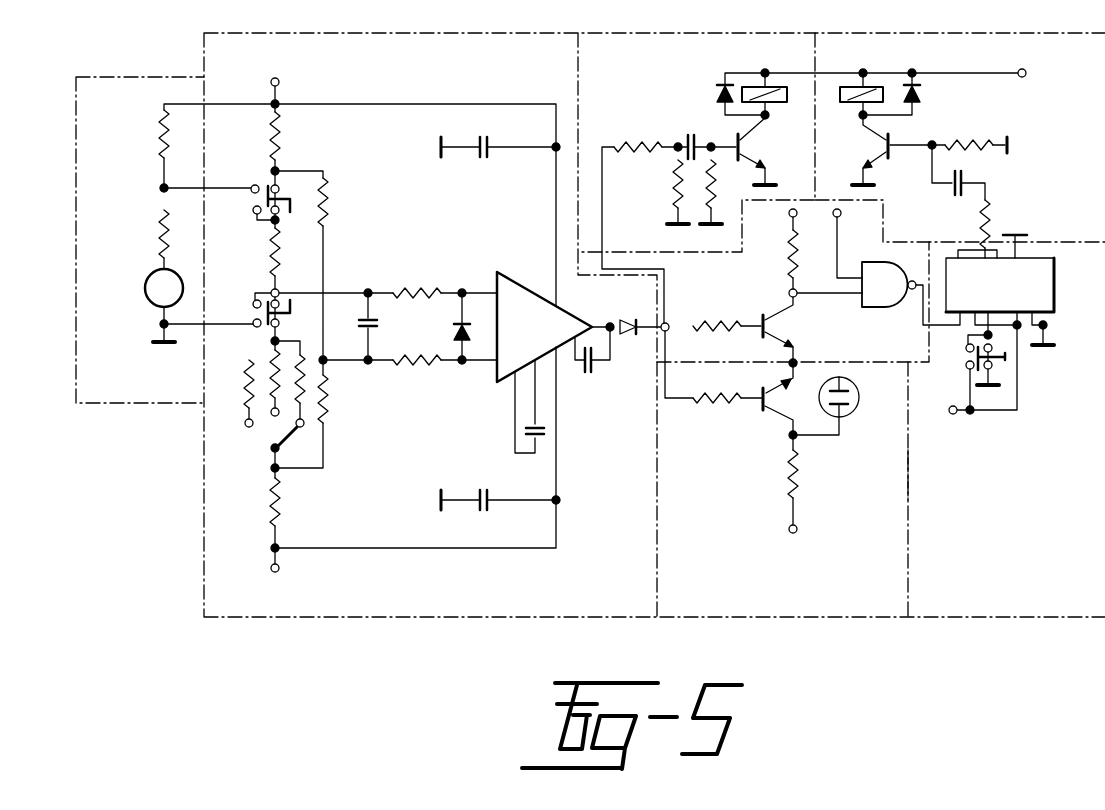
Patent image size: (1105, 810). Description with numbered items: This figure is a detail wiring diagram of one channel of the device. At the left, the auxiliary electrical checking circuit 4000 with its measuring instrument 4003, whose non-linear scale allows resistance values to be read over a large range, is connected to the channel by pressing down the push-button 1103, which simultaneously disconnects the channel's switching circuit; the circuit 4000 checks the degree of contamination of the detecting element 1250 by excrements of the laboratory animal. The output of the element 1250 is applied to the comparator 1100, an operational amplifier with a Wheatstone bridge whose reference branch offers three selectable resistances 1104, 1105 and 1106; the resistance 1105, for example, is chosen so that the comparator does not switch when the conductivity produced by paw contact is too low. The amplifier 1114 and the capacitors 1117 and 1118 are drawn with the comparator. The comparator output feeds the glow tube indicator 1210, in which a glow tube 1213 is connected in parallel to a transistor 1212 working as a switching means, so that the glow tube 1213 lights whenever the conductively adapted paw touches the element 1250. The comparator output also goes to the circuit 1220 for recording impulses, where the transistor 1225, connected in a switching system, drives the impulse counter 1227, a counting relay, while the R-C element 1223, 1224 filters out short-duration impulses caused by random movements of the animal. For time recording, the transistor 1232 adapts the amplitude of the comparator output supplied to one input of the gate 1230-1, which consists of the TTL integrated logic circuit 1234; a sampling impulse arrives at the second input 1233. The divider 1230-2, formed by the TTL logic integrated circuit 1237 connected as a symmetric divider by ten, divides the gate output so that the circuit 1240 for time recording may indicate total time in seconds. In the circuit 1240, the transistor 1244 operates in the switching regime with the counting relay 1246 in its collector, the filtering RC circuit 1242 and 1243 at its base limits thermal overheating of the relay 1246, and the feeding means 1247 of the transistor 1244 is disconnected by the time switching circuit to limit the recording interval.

The auxiliary electrical checking circuit 4000 is at (140, 229).
The measuring instrument 4003 is at (136, 288).
The comparator 1100 is at (654, 314).
The detecting element 1250 is at (244, 252).
The push-button 1103 is at (321, 220).
The resistance 1105 is at (266, 375).
The resistance 1106 is at (312, 340).
The resistance 1104 is at (249, 362).
The amplifier 1114 is at (544, 327).
The capacitor 1117 is at (560, 407).
The capacitor 1118 is at (596, 361).
The circuit for recording impulses 1220 is at (696, 132).
The R-C element 1223 is at (688, 132).
The R-C element 1224 is at (712, 186).
The transistor 1225 is at (754, 143).
The impulse counter 1227 is at (750, 87).
The circuit for time recording 1240 is at (960, 127).
The counting relay 1246 is at (882, 78).
The feeding means 1247 is at (1046, 76).
The filtering RC circuit 1243 is at (967, 133).
The filtering RC circuit 1242 is at (988, 206).
The transistor 1244 is at (882, 158).
The input terminal 1233 is at (858, 243).
The transistor 1232 is at (796, 327).
The TTL integrated logic circuit 1234 is at (911, 300).
The TTL logic integrated circuit 1237 is at (1000, 285).
The gate 1230-1 is at (793, 303).
The divider 1230-2 is at (999, 492).
The transistor 1212 is at (770, 412).
The glow tube 1213 is at (826, 420).
The glow tube indicator 1210 is at (820, 491).